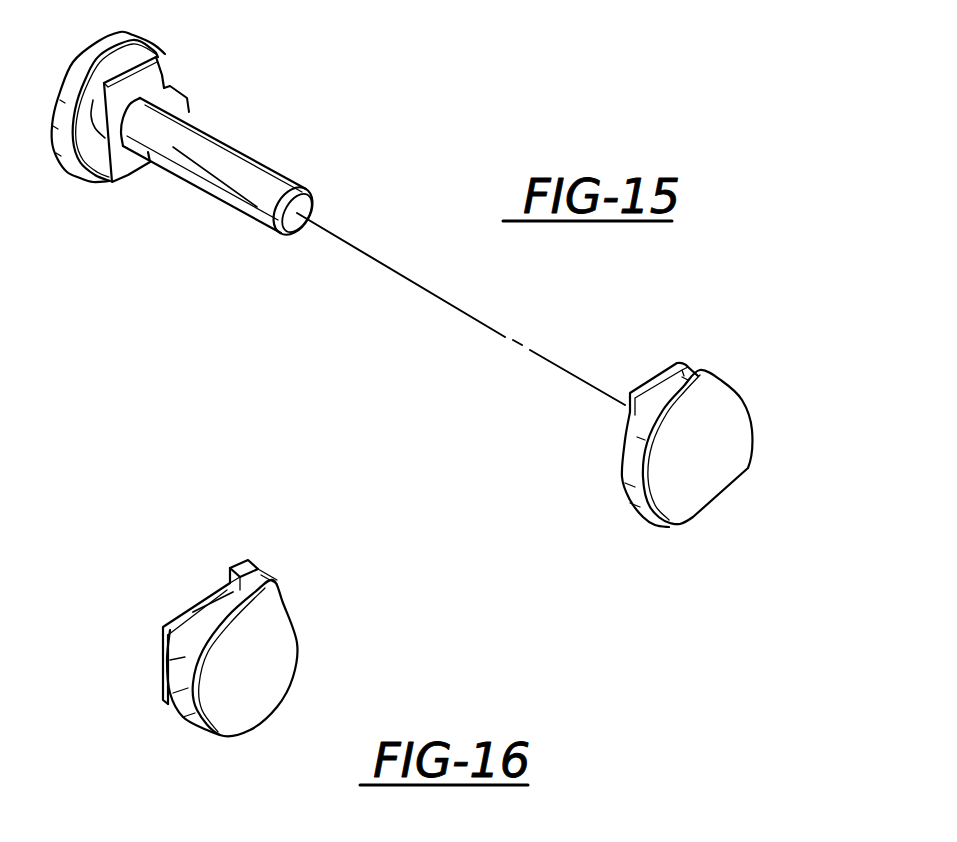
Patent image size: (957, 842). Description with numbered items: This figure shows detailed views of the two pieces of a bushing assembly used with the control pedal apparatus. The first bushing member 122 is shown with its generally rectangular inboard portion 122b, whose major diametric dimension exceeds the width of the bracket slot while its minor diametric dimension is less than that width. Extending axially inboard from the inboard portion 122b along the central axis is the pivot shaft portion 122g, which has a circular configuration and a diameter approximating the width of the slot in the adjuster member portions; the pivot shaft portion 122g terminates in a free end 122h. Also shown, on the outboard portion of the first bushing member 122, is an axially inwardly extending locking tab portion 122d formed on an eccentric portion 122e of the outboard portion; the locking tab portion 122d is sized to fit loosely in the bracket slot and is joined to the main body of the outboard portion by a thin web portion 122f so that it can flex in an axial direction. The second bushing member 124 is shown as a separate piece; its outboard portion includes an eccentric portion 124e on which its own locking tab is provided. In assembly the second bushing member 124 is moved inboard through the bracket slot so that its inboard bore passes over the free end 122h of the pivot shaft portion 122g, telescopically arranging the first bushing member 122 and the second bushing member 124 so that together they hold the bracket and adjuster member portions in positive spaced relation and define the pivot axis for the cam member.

In FIG. 15, the first bushing member 122 is at (222, 178).
In FIG. 15, the inboard portion 122b is at (151, 84).
In FIG. 15, the pivot shaft portion 122g is at (290, 165).
In FIG. 15, the free end 122h is at (253, 203).
In FIG. 15, the second bushing member 124 is at (694, 476).
In FIG. 15, the eccentric portion 124e is at (730, 425).
In FIG. 16, the locking tab portion 122d is at (250, 570).
In FIG. 16, the eccentric portion 122e is at (270, 673).
In FIG. 16, the thin web portion 122f is at (228, 595).